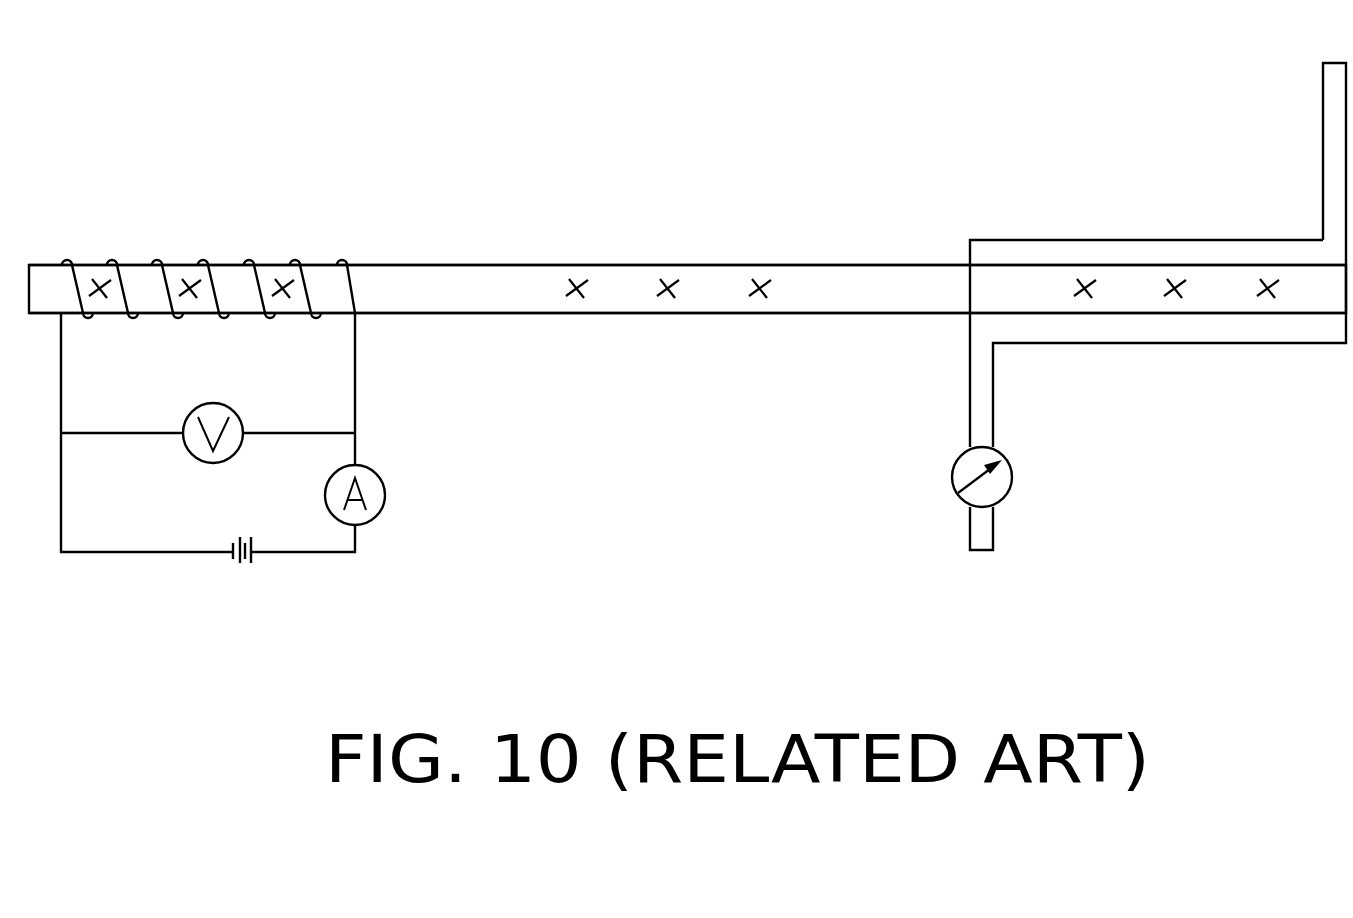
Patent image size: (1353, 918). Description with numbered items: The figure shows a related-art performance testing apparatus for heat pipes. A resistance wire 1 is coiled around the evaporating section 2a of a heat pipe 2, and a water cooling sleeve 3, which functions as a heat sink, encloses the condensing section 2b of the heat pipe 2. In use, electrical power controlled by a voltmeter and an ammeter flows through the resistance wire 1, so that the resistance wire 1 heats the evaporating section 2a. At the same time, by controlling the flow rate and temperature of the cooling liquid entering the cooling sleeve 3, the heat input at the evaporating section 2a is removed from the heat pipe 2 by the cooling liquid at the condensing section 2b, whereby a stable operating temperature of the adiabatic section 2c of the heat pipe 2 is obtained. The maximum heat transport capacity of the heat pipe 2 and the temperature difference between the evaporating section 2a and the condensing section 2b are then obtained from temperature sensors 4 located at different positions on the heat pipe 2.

The resistance wire 1 is at (243, 245).
The heat pipe 2 is at (426, 255).
The evaporating section 2a is at (141, 278).
The condensing section 2b is at (1060, 285).
The adiabatic section 2c is at (715, 285).
The water cooling sleeve 3 is at (1216, 236).
The temperature sensors 4 is at (580, 268).